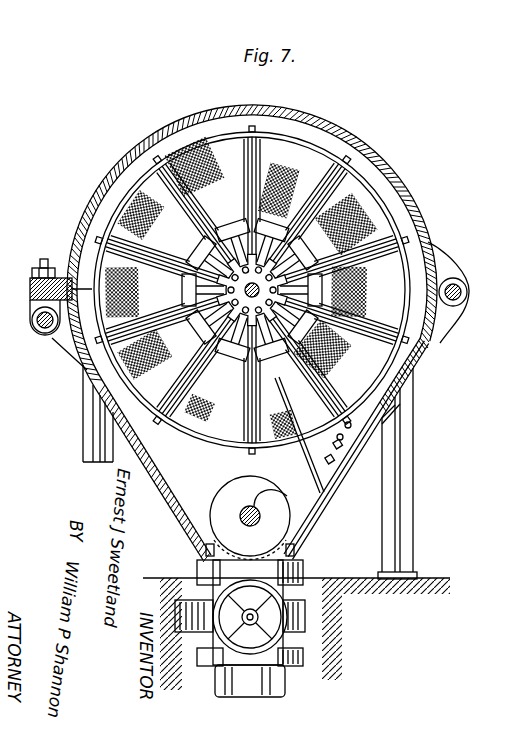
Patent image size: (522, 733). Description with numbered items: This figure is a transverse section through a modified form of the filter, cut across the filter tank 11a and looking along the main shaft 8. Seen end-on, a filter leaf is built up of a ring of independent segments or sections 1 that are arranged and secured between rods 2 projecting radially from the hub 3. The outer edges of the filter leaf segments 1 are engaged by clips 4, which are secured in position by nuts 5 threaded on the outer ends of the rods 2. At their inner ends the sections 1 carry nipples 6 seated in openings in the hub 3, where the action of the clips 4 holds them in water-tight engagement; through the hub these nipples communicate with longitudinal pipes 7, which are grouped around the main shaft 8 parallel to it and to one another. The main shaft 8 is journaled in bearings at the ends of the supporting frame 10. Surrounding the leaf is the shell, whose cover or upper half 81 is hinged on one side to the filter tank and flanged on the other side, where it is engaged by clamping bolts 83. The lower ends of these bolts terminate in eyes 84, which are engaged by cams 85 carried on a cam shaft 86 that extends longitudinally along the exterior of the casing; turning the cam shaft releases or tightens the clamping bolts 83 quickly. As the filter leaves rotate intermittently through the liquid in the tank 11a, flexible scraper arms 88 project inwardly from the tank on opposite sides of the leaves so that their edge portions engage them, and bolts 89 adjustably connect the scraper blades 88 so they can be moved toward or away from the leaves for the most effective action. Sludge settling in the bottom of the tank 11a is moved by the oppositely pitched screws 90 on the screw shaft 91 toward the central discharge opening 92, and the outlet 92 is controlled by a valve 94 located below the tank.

The filter leaf segments 1 is at (247, 288).
The rods 2 is at (265, 299).
The hub 3 is at (292, 264).
The clips 4 is at (140, 158).
The nuts 5 is at (136, 147).
The nipples 6 is at (219, 292).
The longitudinal pipes 7 is at (332, 286).
The main shaft 8 is at (272, 233).
The supporting frame 10 is at (413, 448).
The filter tank 11a is at (385, 418).
The cover or upper half of the shell 81 is at (372, 160).
The clamping bolts 83 is at (78, 212).
The eyes 84 is at (53, 338).
The cams 85 is at (46, 330).
The cam shaft 86 is at (42, 333).
The flexible scraper arms 88 is at (327, 432).
The bolts 89 is at (342, 468).
The oppositely pitched screws 90 is at (283, 492).
The screw shaft 91 is at (246, 514).
The central discharge opening 92 is at (290, 556).
The valve 94 is at (265, 620).